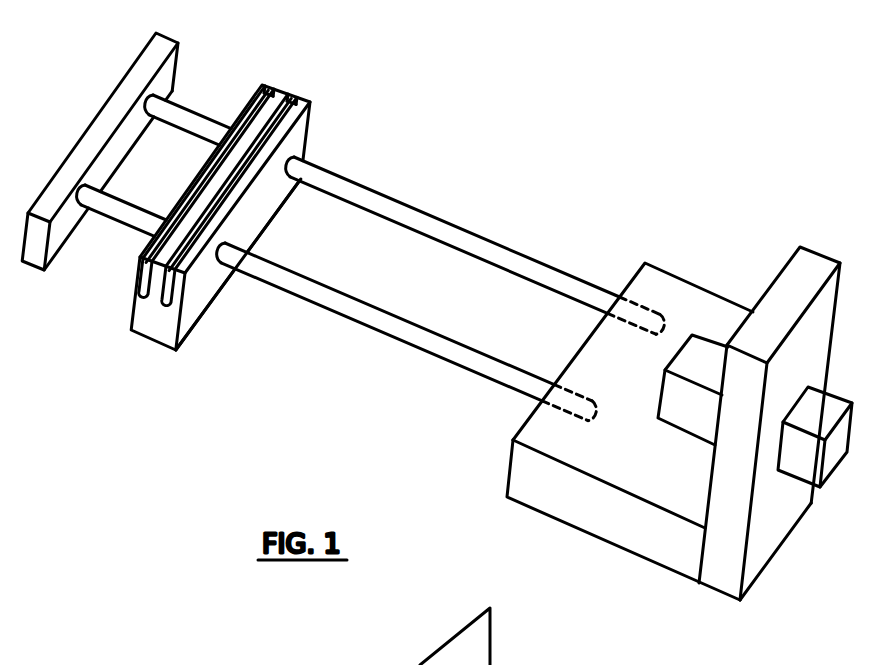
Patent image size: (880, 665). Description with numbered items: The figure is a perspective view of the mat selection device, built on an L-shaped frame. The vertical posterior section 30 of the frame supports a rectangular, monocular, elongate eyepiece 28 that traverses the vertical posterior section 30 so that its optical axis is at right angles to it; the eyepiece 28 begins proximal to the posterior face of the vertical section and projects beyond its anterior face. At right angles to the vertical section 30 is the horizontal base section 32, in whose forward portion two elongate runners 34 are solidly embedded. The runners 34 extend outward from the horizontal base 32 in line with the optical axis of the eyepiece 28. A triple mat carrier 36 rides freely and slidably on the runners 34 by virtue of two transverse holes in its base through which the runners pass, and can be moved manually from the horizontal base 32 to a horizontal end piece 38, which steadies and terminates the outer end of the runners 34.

The eyepiece 28 is at (810, 465).
The vertical posterior section 30 is at (790, 285).
The horizontal base section 32 is at (538, 497).
The runners 34 is at (145, 218).
The triple mat carrier 36 is at (153, 322).
The horizontal end piece 38 is at (33, 250).